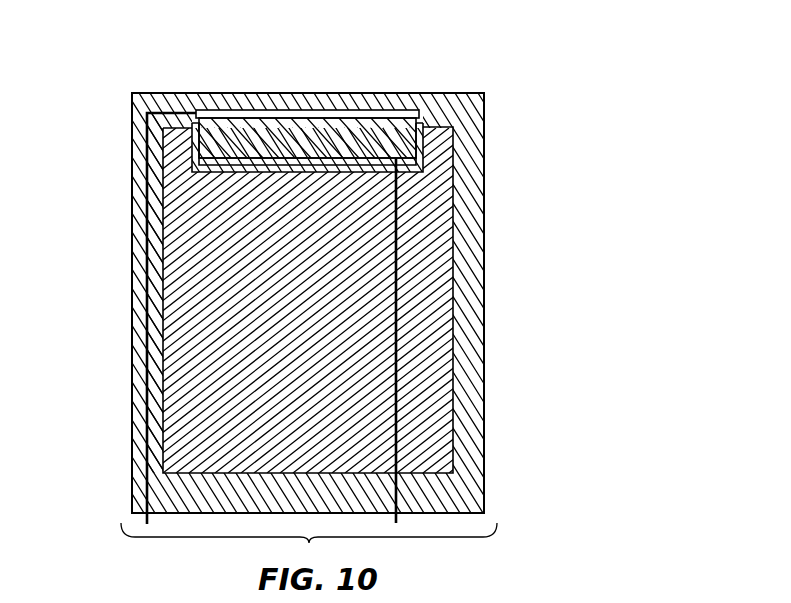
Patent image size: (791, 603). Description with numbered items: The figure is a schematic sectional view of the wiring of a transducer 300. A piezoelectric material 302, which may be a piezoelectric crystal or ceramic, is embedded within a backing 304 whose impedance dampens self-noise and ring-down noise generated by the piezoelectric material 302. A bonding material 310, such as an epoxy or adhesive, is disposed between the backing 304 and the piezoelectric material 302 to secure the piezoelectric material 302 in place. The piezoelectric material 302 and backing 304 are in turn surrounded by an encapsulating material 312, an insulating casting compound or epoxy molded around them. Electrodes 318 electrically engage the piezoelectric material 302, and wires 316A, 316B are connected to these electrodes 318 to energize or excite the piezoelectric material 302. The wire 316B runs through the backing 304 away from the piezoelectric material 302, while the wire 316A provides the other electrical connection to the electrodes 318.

The transducer 300 is at (465, 42).
The piezoelectric material 302 is at (308, 130).
The backing 304 is at (188, 355).
The bonding material 310 is at (192, 150).
The encapsulating material 312 is at (152, 250).
The wire 316A is at (147, 310).
The wire 316B is at (397, 290).
The electrodes 318 is at (240, 110).